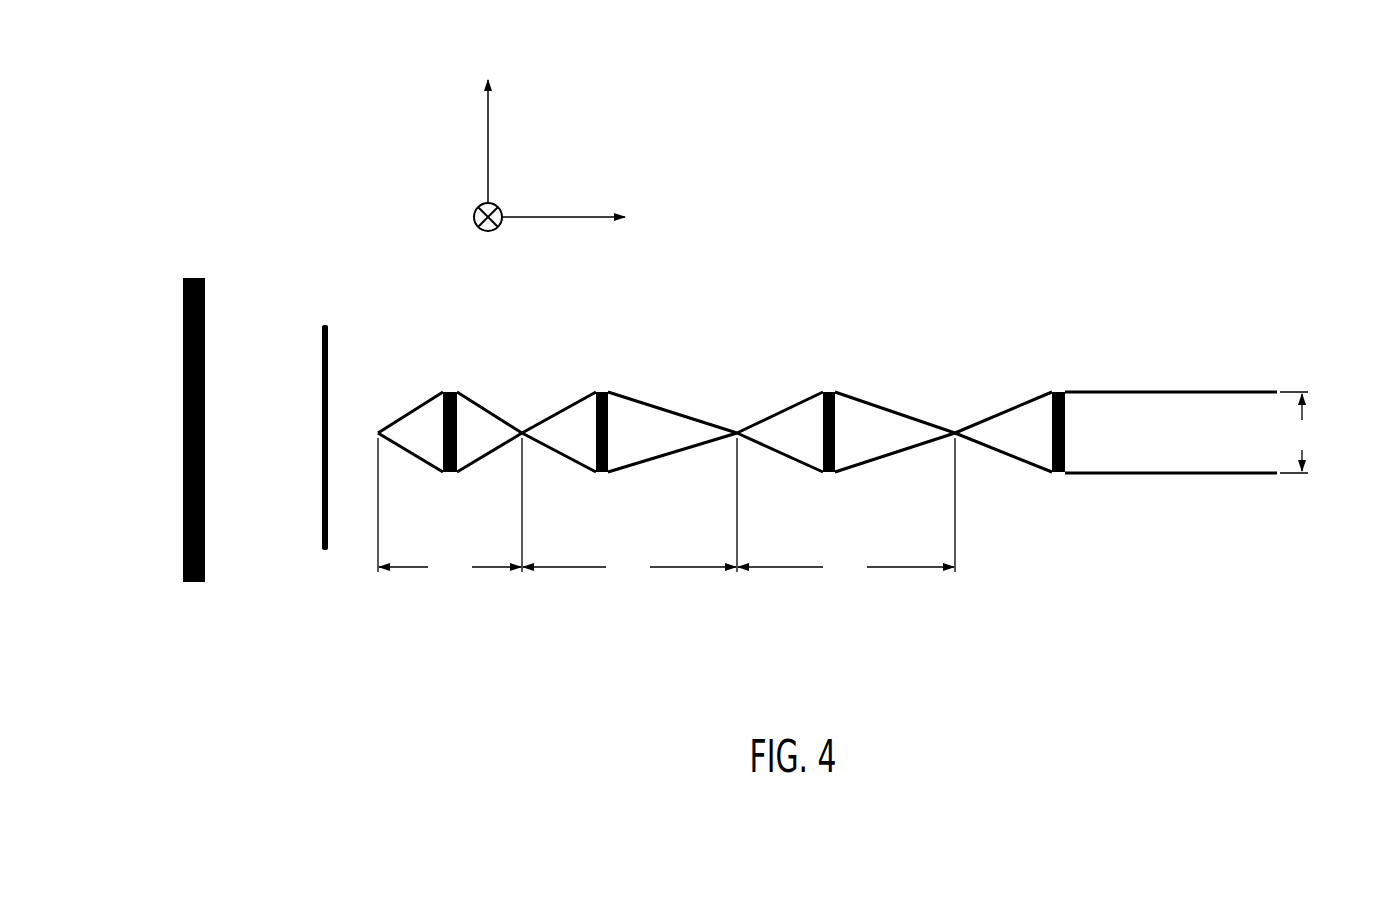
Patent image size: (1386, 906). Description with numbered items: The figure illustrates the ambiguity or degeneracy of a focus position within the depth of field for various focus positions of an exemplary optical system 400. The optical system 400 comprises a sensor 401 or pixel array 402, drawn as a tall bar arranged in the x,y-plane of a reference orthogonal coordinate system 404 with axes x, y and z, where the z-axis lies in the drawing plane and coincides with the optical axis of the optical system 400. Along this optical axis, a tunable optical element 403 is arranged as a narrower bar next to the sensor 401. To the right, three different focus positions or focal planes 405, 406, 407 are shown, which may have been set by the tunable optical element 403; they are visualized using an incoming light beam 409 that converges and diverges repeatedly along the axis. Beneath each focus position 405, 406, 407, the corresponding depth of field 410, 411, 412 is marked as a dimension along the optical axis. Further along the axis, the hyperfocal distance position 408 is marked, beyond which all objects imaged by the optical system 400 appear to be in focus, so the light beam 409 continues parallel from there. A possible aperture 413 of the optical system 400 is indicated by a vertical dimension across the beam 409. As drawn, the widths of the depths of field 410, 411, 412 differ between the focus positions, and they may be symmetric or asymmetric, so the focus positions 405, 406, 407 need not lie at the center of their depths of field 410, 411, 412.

The optical system 400 is at (960, 697).
The sensor 401 is at (192, 277).
The pixel array 402 is at (192, 277).
The tunable optical element 403 is at (325, 324).
The reference orthogonal coordinate system 404 is at (485, 240).
The focus position 405 is at (448, 474).
The focus position 406 is at (600, 474).
The focus position 407 is at (827, 474).
The hyperfocal distance position 408 is at (1057, 474).
The incoming light beam 409 is at (1244, 389).
The depth of field 410 is at (450, 567).
The depth of field 411 is at (629, 567).
The depth of field 412 is at (846, 567).
The aperture 413 is at (1301, 432).